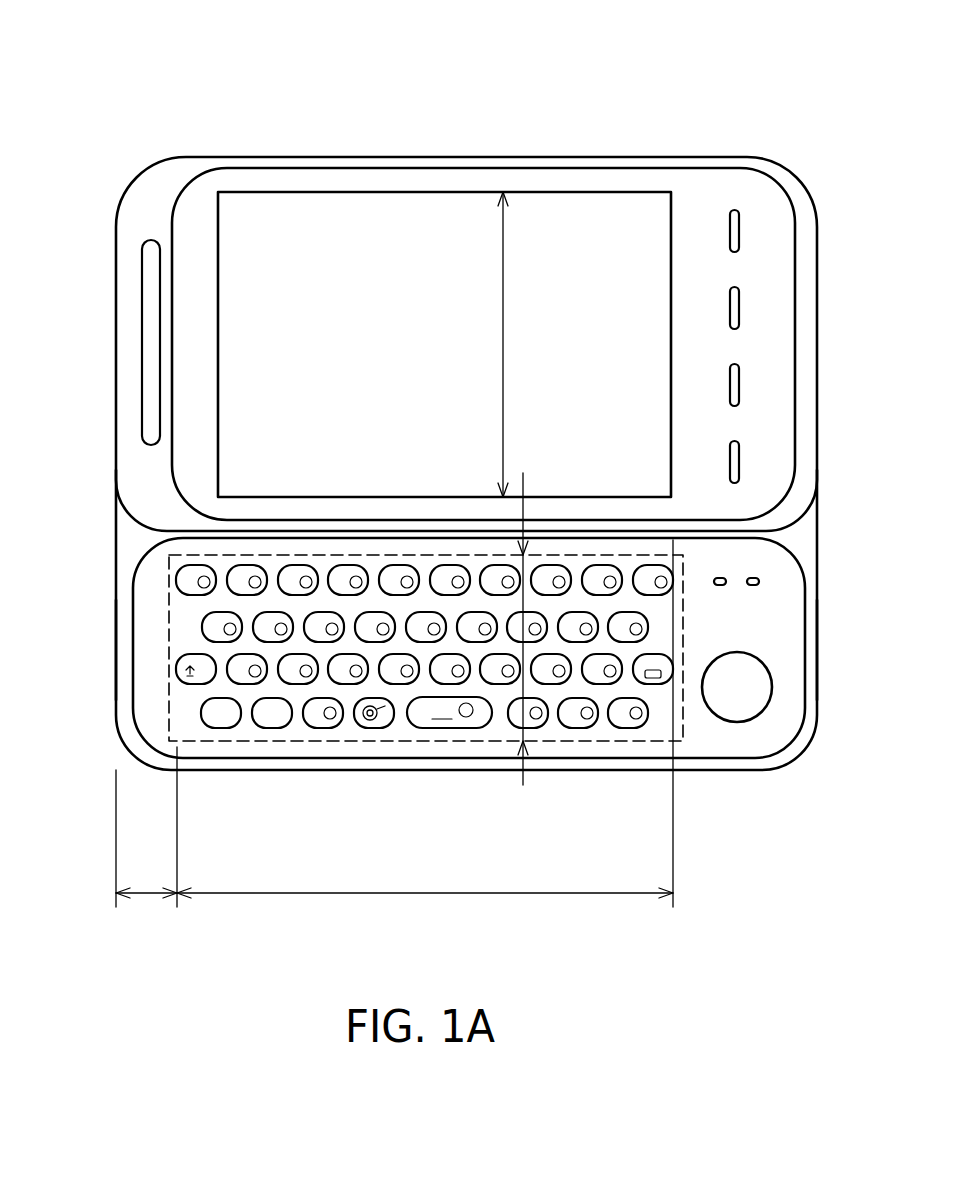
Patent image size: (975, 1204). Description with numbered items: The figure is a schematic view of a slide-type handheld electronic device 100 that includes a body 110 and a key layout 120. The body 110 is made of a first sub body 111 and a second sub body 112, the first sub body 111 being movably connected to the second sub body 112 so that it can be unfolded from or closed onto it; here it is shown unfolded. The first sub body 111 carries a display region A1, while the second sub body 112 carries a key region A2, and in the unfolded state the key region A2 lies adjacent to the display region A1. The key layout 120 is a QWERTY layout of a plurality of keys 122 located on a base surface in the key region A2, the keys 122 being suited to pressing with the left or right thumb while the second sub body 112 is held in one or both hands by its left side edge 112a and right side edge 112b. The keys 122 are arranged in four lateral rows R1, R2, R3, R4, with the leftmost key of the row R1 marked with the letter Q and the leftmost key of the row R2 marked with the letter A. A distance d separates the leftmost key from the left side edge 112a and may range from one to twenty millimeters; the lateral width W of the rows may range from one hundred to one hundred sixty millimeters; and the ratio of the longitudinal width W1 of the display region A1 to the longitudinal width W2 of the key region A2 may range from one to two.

The handheld electronic device 100 is at (125, 113).
The body 110 is at (50, 425).
The first sub body 111 is at (116, 388).
The second sub body 112 is at (116, 500).
The left side edge 112a is at (116, 645).
The right side edge 112b is at (818, 652).
The key layout 120 is at (168, 575).
The key 122 is at (380, 717).
The display region A1 is at (290, 218).
The key region A2 is at (253, 743).
The lateral row R1 is at (168, 583).
The lateral row R2 is at (193, 627).
The lateral row R3 is at (166, 668).
The lateral row R4 is at (193, 713).
The longitudinal width of the display region W1 is at (513, 344).
The longitudinal width of the key region W2 is at (535, 627).
The lateral width of the lateral rows W is at (425, 738).
The distance between the leftmost key and the left side edge d is at (146, 841).